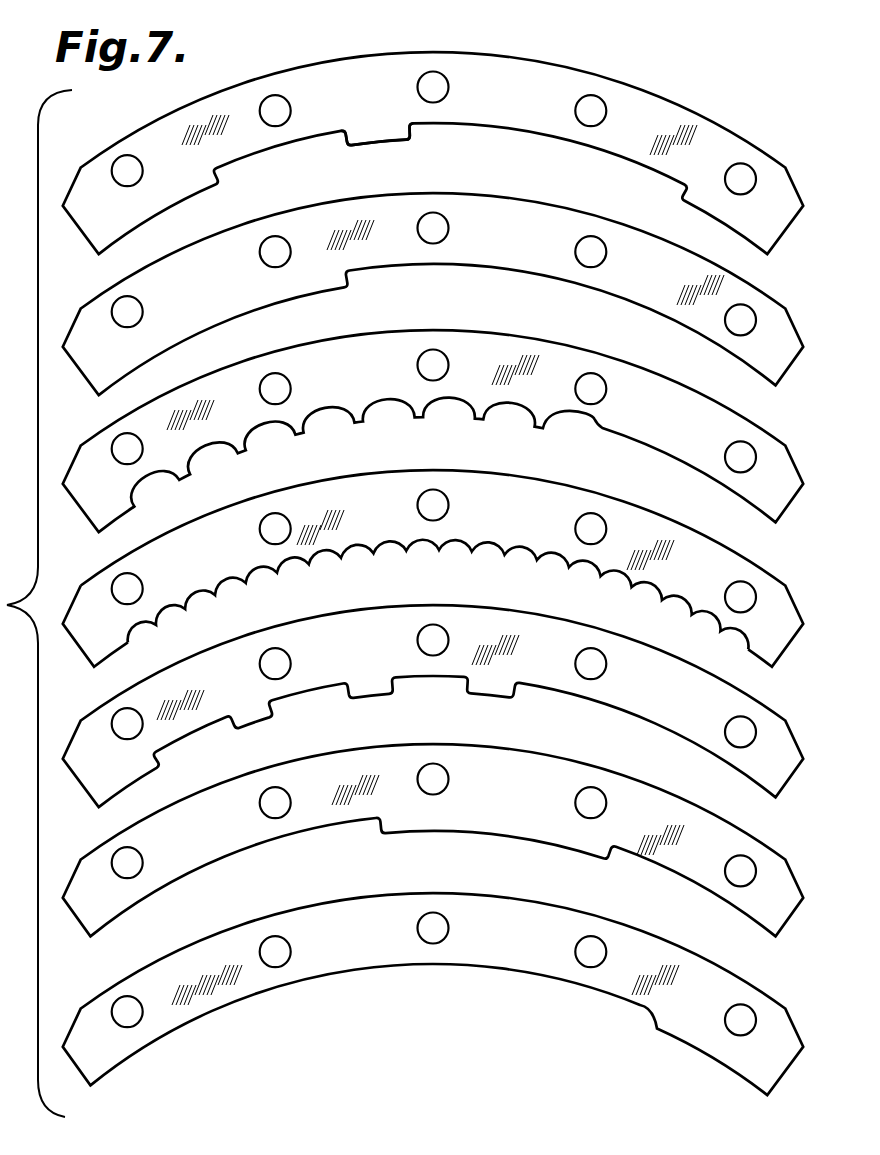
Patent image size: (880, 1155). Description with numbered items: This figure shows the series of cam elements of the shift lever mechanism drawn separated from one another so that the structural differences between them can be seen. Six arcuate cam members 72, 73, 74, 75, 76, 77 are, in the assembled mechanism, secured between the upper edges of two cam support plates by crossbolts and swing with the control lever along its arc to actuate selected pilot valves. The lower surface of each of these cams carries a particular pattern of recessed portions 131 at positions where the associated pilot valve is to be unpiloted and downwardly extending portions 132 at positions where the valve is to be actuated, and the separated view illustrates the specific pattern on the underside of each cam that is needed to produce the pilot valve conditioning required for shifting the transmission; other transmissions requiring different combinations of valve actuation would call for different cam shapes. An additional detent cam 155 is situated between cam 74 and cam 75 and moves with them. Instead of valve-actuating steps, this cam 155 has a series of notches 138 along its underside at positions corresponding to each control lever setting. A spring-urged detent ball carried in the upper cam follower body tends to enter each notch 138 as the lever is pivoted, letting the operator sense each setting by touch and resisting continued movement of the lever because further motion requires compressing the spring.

The arcuate cam member 72 is at (433, 145).
The arcuate cam member 73 is at (562, 220).
The arcuate cam member 74 is at (611, 368).
The detent cam 155 is at (433, 564).
The arcuate cam member 75 is at (577, 634).
The arcuate cam member 76 is at (566, 770).
The arcuate cam member 77 is at (565, 914).
The recessed portions 131 is at (267, 150).
The downwardly extending portions 132 is at (410, 148).
The notches 138 is at (273, 557).